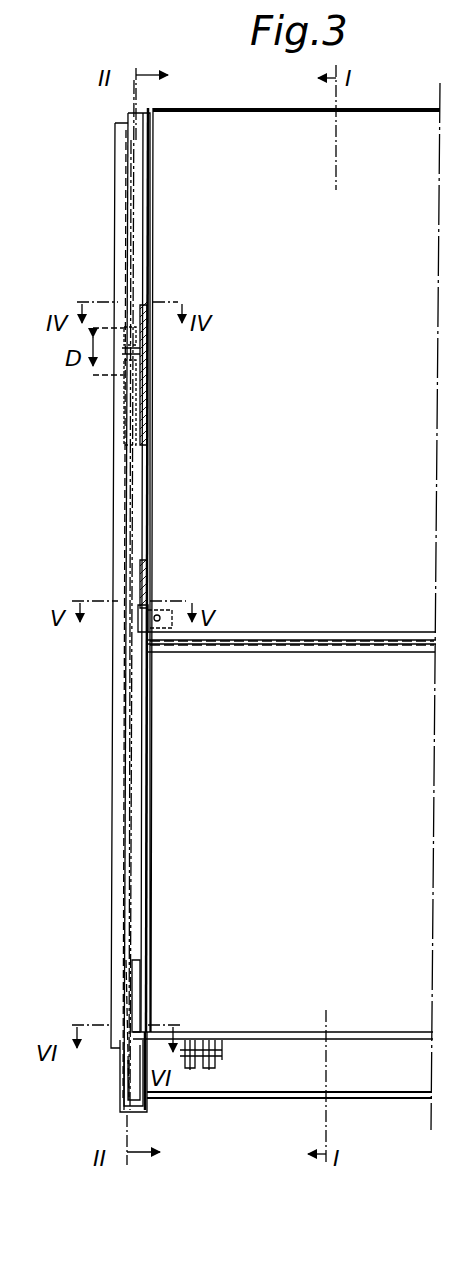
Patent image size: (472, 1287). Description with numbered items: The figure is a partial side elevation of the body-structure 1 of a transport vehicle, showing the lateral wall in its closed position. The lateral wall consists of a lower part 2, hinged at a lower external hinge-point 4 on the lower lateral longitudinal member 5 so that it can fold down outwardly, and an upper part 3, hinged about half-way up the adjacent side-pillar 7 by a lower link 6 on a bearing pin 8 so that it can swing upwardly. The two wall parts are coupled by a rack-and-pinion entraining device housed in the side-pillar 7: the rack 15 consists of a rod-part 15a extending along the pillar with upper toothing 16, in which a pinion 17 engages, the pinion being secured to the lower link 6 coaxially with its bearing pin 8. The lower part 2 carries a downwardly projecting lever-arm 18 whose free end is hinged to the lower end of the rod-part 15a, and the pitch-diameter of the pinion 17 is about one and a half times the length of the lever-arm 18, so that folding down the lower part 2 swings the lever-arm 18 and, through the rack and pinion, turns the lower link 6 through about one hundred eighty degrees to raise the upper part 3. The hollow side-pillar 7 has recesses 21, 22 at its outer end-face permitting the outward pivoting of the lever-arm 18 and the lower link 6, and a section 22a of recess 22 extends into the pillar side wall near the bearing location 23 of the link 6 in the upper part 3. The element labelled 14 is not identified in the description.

The body-structure 1 is at (113, 162).
The lower part 2 is at (326, 872).
The upper part 3 is at (338, 384).
The lower external hinge-point 4 is at (205, 1072).
The lower lateral longitudinal member 5 is at (395, 1070).
The lower link 6 is at (144, 435).
The side-pillar 7 is at (128, 222).
The bearing pin 8 is at (120, 351).
The top wall 14 is at (225, 107).
The rack 15 is at (133, 720).
The rod-part 15a is at (130, 988).
The toothing 16 is at (125, 415).
The pinion 17 is at (122, 380).
The lever-arm 18 is at (132, 1075).
The recess 21 is at (137, 968).
The recess 22 is at (145, 198).
The section of recess 22a is at (143, 605).
The bearing location 23 is at (138, 620).